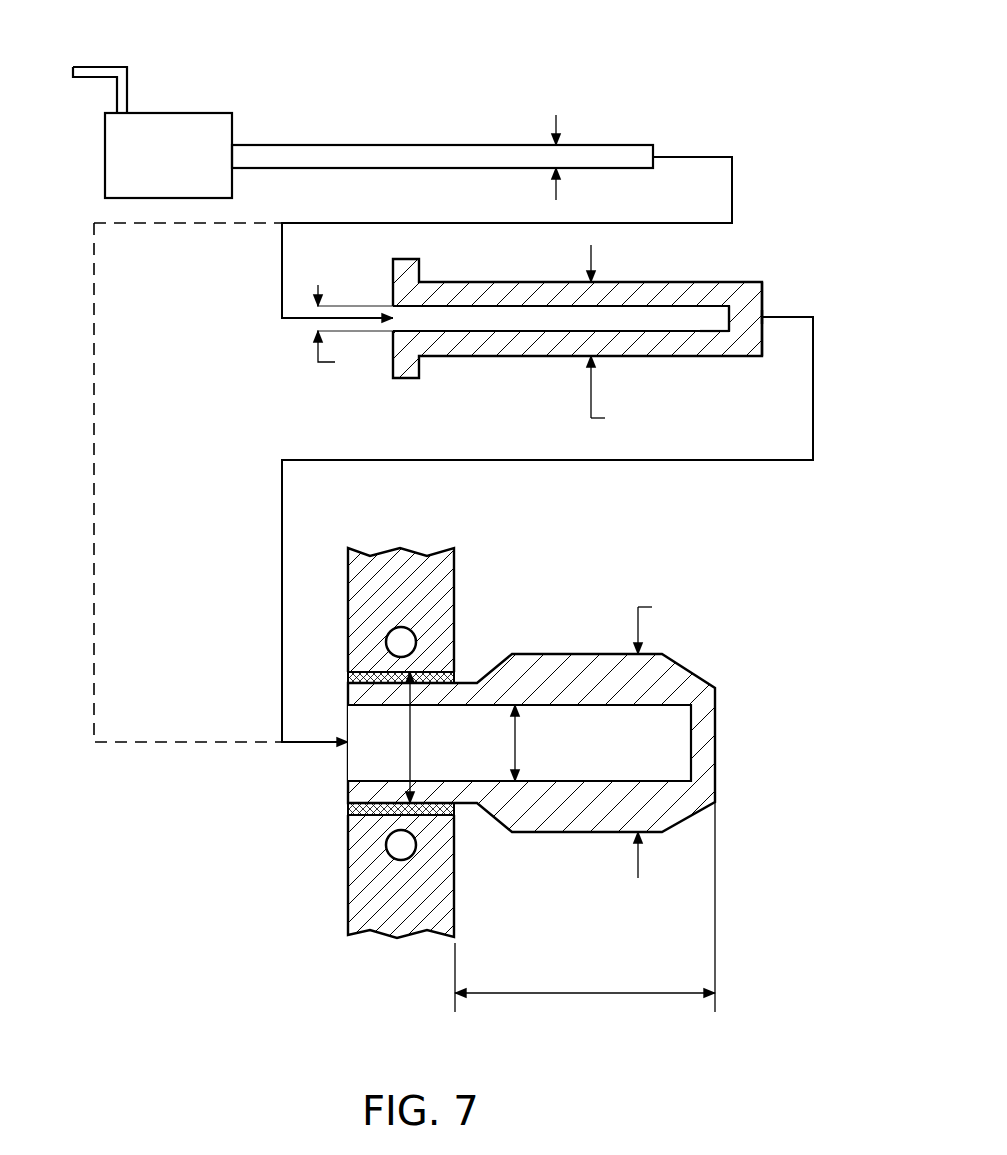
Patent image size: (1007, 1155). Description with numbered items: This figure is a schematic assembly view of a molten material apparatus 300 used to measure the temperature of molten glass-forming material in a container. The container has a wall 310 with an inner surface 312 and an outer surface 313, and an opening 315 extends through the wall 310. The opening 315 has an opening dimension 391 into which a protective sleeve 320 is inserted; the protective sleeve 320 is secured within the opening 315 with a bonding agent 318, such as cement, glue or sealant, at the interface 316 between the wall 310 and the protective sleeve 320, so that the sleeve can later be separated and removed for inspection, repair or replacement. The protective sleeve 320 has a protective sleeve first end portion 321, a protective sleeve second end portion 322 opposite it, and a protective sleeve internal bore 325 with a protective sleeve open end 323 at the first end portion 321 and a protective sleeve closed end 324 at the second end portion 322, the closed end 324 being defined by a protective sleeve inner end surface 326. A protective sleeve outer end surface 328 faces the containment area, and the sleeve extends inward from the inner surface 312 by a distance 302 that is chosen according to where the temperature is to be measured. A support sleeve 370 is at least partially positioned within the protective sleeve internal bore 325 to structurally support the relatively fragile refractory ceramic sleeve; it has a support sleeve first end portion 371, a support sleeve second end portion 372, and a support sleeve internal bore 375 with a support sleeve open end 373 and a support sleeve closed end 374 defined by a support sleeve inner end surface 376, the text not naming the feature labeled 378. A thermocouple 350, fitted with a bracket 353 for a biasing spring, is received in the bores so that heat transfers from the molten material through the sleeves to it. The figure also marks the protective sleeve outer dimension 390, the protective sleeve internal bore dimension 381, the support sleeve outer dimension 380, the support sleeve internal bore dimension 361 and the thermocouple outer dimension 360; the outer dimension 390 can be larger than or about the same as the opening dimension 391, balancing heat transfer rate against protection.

The molten material apparatus 300 is at (768, 98).
The distance 302 is at (580, 995).
The wall 310 is at (397, 566).
The inner surface 312 is at (460, 571).
The outer surface 313 is at (344, 571).
The opening 315 is at (360, 678).
The interface 316 is at (455, 683).
The bonding agent 318 is at (360, 818).
The protective sleeve 320 is at (572, 660).
The protective sleeve first end portion 321 is at (358, 796).
The protective sleeve second end portion 322 is at (705, 715).
The protective sleeve open end 323 is at (357, 752).
The protective sleeve closed end 324 is at (648, 770).
The protective sleeve internal bore 325 is at (532, 772).
The protective sleeve inner end surface 326 is at (688, 742).
The protective sleeve outer end surface 328 is at (722, 758).
The thermocouple 350 is at (360, 145).
The bracket 353 is at (95, 67).
The thermocouple outer dimension 360 is at (556, 141).
The support sleeve internal bore dimension 361 is at (355, 332).
The support sleeve 370 is at (571, 323).
The support sleeve first end portion 371 is at (408, 378).
The support sleeve second end portion 372 is at (752, 333).
The support sleeve open end 373 is at (408, 318).
The support sleeve closed end 374 is at (710, 328).
The support sleeve internal bore 375 is at (510, 318).
The support sleeve inner end surface 376 is at (724, 322).
The waveguide connection 378 is at (768, 312).
The support sleeve outer dimension 380 is at (626, 340).
The protective sleeve internal bore dimension 381 is at (517, 745).
The protective sleeve outer dimension 390 is at (673, 734).
The opening dimension 391 is at (412, 748).